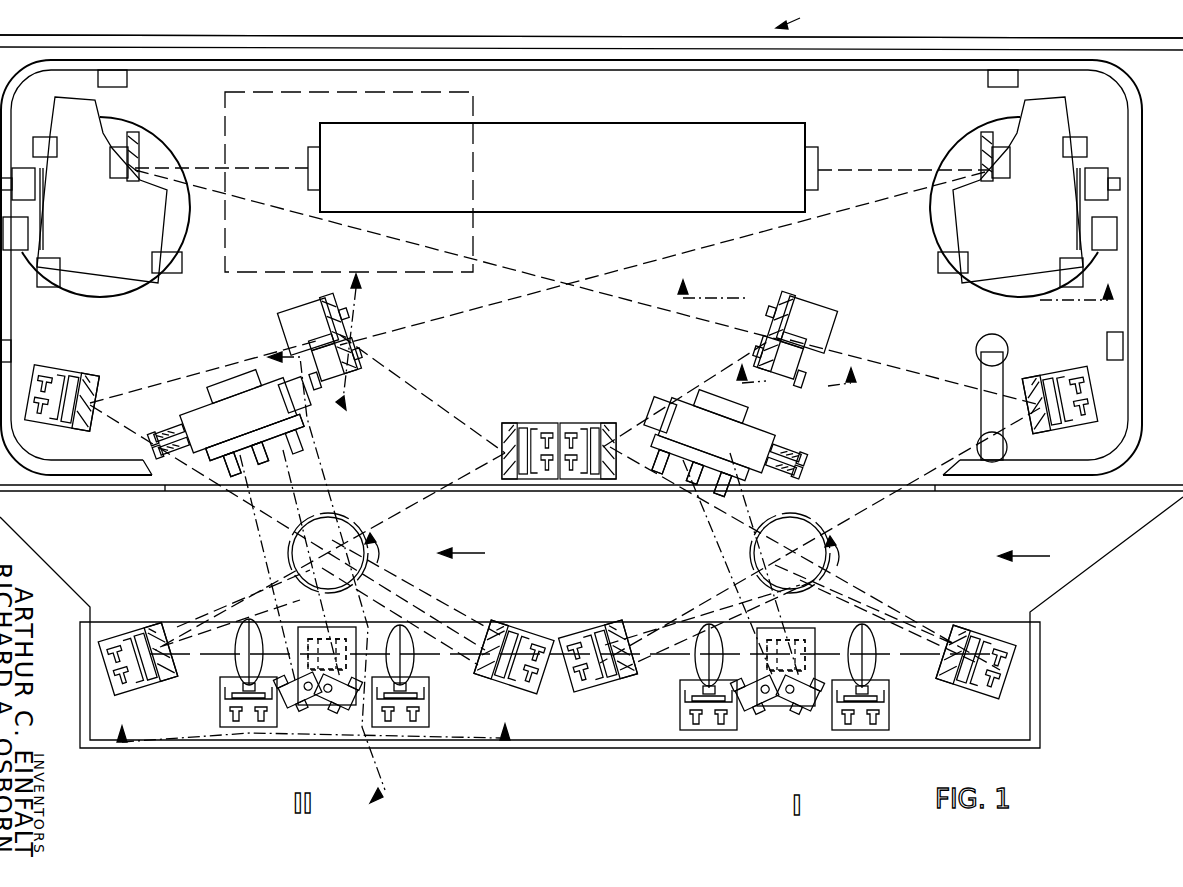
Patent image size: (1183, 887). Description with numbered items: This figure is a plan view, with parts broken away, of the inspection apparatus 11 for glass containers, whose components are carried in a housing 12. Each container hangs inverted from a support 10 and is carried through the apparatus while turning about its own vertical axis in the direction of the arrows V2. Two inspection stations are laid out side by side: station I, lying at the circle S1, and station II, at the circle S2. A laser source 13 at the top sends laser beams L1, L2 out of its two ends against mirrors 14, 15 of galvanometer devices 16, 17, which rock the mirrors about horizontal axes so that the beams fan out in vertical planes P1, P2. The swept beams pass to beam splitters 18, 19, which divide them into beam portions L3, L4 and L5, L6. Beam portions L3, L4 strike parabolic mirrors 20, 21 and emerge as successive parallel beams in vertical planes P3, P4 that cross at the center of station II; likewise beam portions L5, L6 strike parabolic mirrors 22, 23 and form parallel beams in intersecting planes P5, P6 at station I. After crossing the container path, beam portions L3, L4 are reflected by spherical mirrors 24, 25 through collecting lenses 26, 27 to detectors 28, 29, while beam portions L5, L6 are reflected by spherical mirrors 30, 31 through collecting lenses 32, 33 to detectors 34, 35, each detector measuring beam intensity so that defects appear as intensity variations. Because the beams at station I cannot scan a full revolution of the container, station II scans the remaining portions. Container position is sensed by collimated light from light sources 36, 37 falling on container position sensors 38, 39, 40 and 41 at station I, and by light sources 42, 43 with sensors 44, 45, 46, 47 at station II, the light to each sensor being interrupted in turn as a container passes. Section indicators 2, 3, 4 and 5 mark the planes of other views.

The inspection apparatus 11 is at (803, 20).
The housing 12 is at (860, 42).
The laser source 13 is at (633, 122).
The mirror 14 is at (985, 140).
The mirror 15 is at (138, 140).
The galvanometer device 16 is at (1070, 125).
The galvanometer device 17 is at (58, 125).
The beam splitter 18 is at (345, 312).
The beam splitter 19 is at (765, 322).
The parabolic mirror 20 is at (80, 378).
The parabolic mirror 21 is at (503, 423).
The parabolic mirror 22 is at (602, 482).
The parabolic mirror 23 is at (1040, 430).
The spherical mirror 24 is at (500, 630).
The spherical mirror 25 is at (145, 630).
The collecting lens 26 is at (410, 675).
The collecting lens 27 is at (235, 660).
The detector 28 is at (342, 635).
The detector 29 is at (315, 635).
The spherical mirror 30 is at (960, 630).
The spherical mirror 31 is at (612, 630).
The collecting lens 32 is at (875, 672).
The collecting lens 33 is at (690, 665).
The detector 34 is at (805, 635).
The detector 35 is at (765, 635).
The light source 36 is at (803, 712).
The light source 37 is at (755, 712).
The container position sensor 38 is at (768, 433).
The container position sensor 39 is at (755, 462).
The container position sensor 40 is at (725, 490).
The container position sensor 41 is at (675, 490).
The light source 42 is at (345, 712).
The light source 43 is at (296, 712).
The sensor 44 is at (288, 440).
The sensor 45 is at (280, 460).
The sensor 46 is at (240, 455).
The sensor 47 is at (215, 490).
The section line 2- 2 is at (795, 361).
The section line 3- 3 is at (917, 281).
The section line 4- 4 is at (317, 722).
The section line 5- 5 is at (358, 339).
The support 10 is at (328, 579).
The laser beam L1 is at (852, 170).
The laser beam L2 is at (243, 168).
The laser beam portion L3 is at (235, 362).
The laser beam portion L4 is at (405, 383).
The laser beam portion L5 is at (690, 395).
The laser beam portion L6 is at (925, 355).
The vertical plane P1 is at (828, 225).
The vertical plane P2 is at (517, 262).
The vertical plane P3 is at (248, 523).
The vertical plane P4 is at (440, 513).
The plane P5 is at (702, 522).
The plane P6 is at (878, 515).
The sample station S1 is at (807, 516).
The sample station S2 is at (372, 503).
The direction of rotation arrows V2 is at (618, 554).